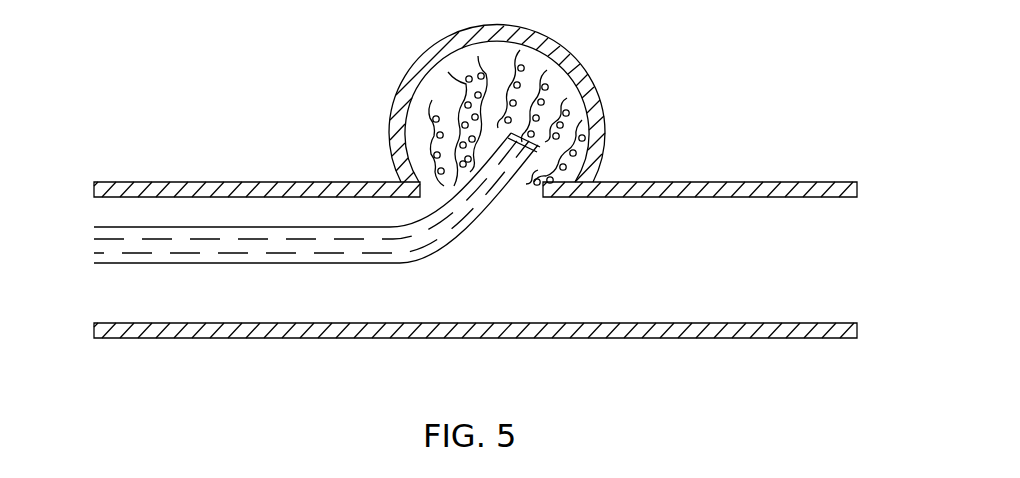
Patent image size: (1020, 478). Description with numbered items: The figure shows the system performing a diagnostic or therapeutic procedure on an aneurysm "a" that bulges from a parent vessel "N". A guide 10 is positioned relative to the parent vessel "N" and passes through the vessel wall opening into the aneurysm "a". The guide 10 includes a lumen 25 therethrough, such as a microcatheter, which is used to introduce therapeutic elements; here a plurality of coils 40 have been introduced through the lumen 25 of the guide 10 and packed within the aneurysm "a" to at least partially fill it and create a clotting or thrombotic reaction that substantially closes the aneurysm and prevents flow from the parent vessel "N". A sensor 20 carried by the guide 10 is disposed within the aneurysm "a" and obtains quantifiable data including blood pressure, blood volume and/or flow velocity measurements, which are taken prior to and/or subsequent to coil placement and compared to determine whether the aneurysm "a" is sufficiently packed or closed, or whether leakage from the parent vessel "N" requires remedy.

The guide 10 is at (116, 256).
The sensor 20 is at (490, 175).
The lumen 25 is at (212, 256).
The coils 40 is at (545, 50).
The aneurysm a is at (600, 145).
The parent vessel N is at (800, 338).